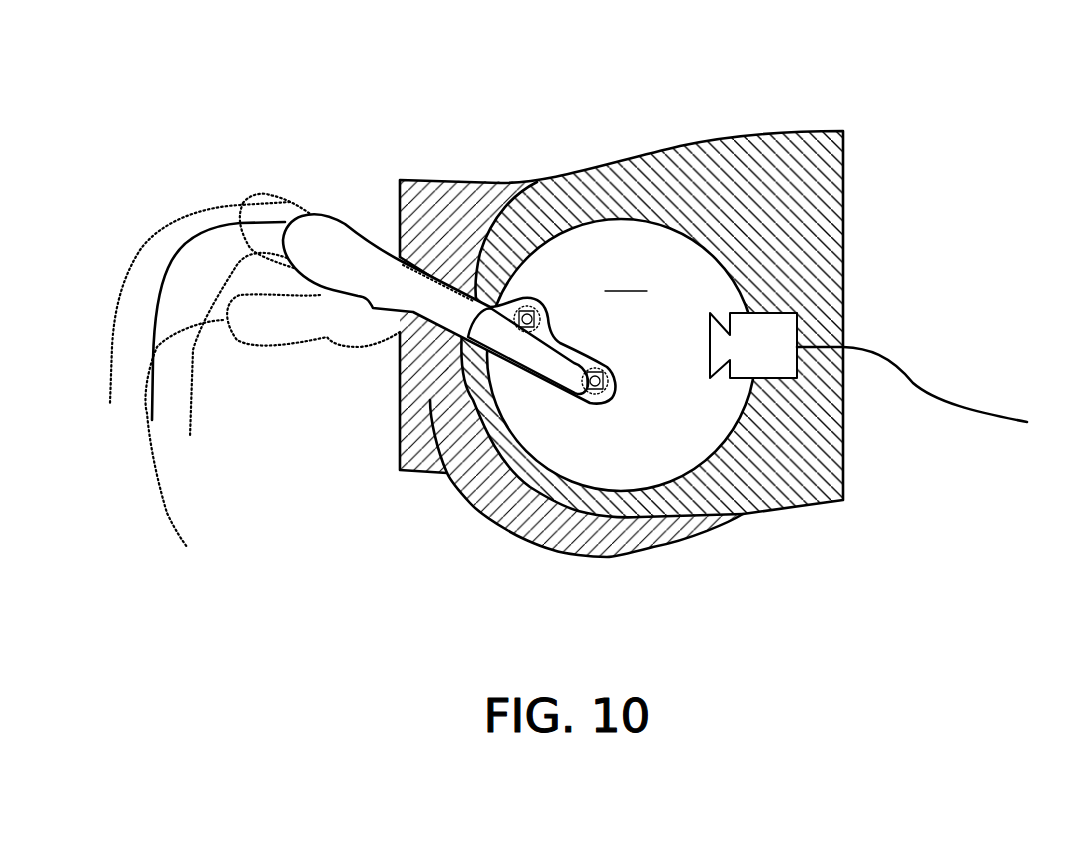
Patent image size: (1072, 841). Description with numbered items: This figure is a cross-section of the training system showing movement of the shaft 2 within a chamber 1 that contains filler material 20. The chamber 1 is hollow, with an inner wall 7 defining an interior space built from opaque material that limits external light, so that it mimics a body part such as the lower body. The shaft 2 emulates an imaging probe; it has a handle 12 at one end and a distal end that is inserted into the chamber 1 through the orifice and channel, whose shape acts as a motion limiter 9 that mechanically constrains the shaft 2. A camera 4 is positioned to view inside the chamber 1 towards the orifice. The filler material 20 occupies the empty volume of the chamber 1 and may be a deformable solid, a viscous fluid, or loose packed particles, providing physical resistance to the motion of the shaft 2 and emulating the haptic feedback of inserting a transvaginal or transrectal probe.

The chamber 1 is at (593, 165).
The shaft 2 is at (341, 205).
The handle 12 is at (340, 220).
The filler material 20 is at (621, 355).
The camera 4 is at (782, 330).
The inner wall 7 is at (642, 489).
The motion limiter 9 is at (577, 388).